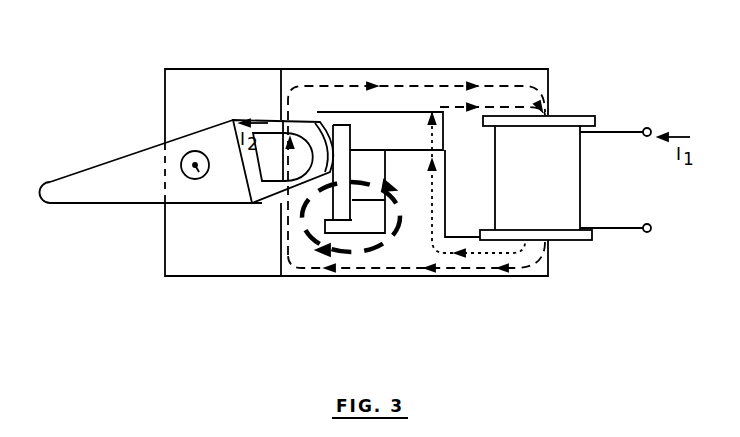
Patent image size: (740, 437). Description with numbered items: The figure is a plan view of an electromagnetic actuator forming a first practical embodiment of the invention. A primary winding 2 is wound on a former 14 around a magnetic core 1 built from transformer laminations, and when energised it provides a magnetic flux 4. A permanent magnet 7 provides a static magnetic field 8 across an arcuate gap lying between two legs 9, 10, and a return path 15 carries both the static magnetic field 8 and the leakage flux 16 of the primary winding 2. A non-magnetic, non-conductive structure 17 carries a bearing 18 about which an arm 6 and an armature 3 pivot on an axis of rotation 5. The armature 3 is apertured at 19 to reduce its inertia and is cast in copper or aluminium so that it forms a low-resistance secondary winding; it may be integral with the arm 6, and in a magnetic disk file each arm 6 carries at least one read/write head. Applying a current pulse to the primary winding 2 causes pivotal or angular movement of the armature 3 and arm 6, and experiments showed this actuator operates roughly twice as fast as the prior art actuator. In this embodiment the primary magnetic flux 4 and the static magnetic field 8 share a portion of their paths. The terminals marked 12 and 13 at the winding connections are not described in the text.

The magnetic core 1 is at (398, 68).
The primary winding 2 is at (583, 150).
The armature 3 is at (252, 206).
The magnetic flux 4 is at (460, 84).
The axis of rotation 5 is at (200, 179).
The arm 6 is at (98, 166).
The permanent magnet 7 is at (366, 160).
The static magnetic field 8 is at (343, 270).
The leg 9 is at (300, 212).
The leg 10 is at (318, 255).
The terminal 12 is at (648, 127).
The terminal 13 is at (650, 232).
The former 14 is at (570, 115).
The return path 15 is at (412, 250).
The leakage flux 16 is at (470, 262).
The non-magnetic non-conductive structure 17 is at (232, 68).
The bearing 18 is at (195, 150).
The aperture 19 is at (268, 143).